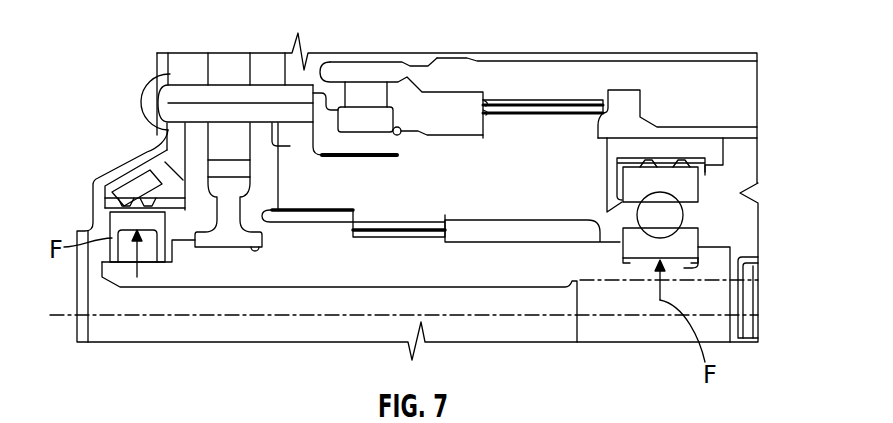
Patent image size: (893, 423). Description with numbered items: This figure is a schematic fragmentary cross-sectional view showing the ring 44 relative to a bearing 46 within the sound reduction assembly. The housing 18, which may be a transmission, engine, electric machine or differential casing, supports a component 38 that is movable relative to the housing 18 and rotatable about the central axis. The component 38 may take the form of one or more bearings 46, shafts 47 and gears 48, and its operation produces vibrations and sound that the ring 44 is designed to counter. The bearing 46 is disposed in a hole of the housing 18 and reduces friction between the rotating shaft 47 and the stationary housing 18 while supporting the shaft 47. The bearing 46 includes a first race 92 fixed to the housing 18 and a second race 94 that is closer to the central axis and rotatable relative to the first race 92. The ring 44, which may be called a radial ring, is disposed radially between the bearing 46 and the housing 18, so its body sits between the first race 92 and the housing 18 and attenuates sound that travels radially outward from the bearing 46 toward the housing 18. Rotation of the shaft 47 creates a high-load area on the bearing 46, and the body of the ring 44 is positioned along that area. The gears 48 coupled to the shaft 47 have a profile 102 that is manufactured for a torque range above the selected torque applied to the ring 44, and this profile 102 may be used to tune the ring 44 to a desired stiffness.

The housing 18 is at (75, 296).
The component 38 is at (437, 138).
The bearing 46 is at (100, 224).
The gear 48 is at (340, 214).
The ring 44 is at (137, 202).
The profile 102 is at (368, 223).
The first race 92 is at (700, 192).
The second race 94 is at (700, 235).
The shaft 47 is at (683, 270).